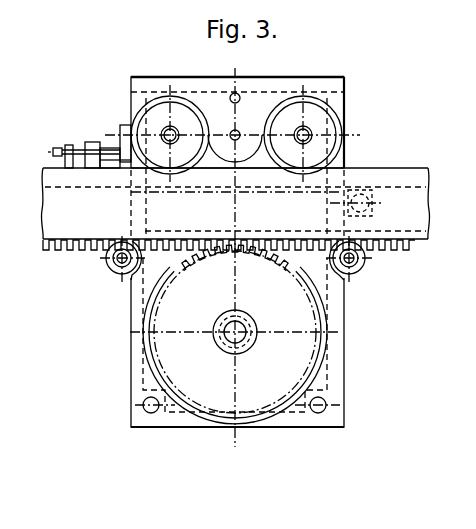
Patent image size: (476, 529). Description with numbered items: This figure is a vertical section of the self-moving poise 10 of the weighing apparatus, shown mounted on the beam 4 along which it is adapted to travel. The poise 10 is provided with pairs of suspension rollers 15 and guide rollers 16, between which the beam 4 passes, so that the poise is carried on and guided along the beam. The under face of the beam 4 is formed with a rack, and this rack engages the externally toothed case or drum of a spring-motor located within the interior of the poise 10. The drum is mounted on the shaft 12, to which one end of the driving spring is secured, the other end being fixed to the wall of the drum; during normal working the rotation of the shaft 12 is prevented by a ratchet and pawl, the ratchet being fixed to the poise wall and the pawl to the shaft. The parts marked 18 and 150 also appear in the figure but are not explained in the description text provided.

The beam 4 is at (403, 157).
The self-moving poise 10 is at (238, 434).
The shaft 12 is at (241, 322).
The suspension rollers 15 is at (341, 118).
The guide rollers 16 is at (355, 271).
The adjusting screw 18 is at (36, 168).
The locking device 150 is at (390, 169).